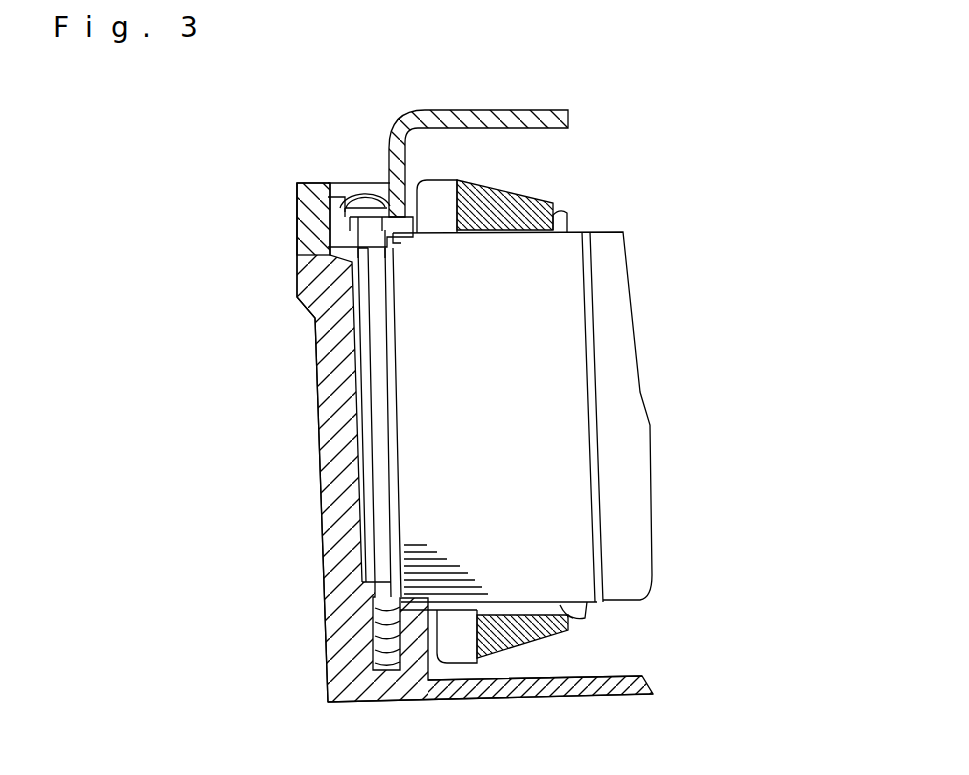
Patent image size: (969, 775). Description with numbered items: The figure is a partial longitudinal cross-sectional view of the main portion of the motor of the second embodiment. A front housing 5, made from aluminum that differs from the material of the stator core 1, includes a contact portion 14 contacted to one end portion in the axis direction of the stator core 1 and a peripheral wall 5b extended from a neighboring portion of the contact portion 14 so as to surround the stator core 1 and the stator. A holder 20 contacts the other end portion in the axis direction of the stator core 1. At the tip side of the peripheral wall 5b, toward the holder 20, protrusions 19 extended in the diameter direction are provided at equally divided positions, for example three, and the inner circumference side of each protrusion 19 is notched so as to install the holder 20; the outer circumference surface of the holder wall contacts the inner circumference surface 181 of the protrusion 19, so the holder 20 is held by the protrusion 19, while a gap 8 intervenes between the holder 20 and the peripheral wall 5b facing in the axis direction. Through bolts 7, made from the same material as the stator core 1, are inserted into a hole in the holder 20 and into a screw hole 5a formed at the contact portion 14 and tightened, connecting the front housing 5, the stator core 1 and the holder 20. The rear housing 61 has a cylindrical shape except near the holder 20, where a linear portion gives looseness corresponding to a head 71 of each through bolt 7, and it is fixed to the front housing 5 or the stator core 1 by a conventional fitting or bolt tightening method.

The stator core 1 is at (572, 406).
The front housing 5 is at (338, 650).
The screw hole 5a is at (390, 680).
The peripheral wall 5b is at (345, 390).
The through bolt 7 is at (390, 580).
The gap 8 is at (337, 253).
The contact portion 14 is at (397, 575).
The protrusion 19 is at (340, 200).
The holder 20 is at (323, 185).
The rear housing 61 is at (540, 132).
The head 71 is at (393, 202).
The inner circumference surface 181 is at (357, 218).